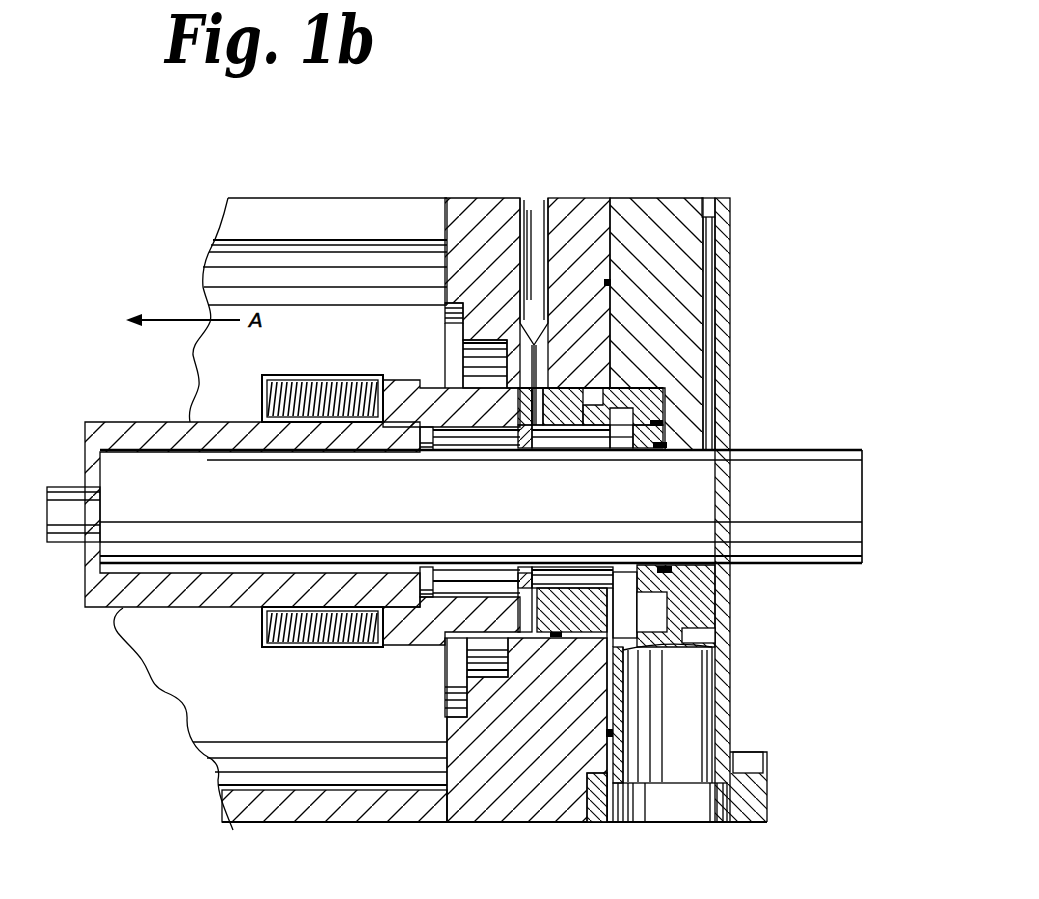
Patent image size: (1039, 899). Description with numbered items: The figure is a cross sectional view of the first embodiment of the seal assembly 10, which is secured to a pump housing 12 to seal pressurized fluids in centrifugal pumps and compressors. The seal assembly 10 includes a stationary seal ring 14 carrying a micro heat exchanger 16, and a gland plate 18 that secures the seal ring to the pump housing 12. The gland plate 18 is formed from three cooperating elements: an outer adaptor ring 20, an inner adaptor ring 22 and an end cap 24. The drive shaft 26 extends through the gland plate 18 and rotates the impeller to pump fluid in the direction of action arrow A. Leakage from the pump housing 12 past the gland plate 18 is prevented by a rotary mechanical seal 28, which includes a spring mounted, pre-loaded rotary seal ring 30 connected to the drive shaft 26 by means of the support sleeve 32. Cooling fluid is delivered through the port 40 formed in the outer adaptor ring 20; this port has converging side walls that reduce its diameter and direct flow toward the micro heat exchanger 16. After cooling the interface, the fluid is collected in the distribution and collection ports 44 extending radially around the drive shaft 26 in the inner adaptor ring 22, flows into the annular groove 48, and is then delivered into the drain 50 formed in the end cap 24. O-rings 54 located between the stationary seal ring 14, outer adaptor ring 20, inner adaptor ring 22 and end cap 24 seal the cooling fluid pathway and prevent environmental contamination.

The seal assembly 10 is at (772, 215).
The pump housing 12 is at (282, 214).
The stationary seal ring 14 is at (552, 407).
The micro heat exchanger 16 is at (552, 383).
The gland plate 18 is at (605, 178).
The outer adaptor ring 20 is at (477, 223).
The inner adaptor ring 22 is at (518, 590).
The end cap 24 is at (657, 217).
The drive shaft 26 is at (788, 465).
The rotary mechanical seal 28 is at (334, 686).
The rotary seal ring 30 is at (436, 393).
The support sleeve 32 is at (164, 423).
The port 40 is at (530, 213).
The distribution and collection ports 44 is at (560, 442).
The annular groove 48 is at (655, 423).
The drain 50 is at (695, 777).
The O-rings 54 is at (607, 282).